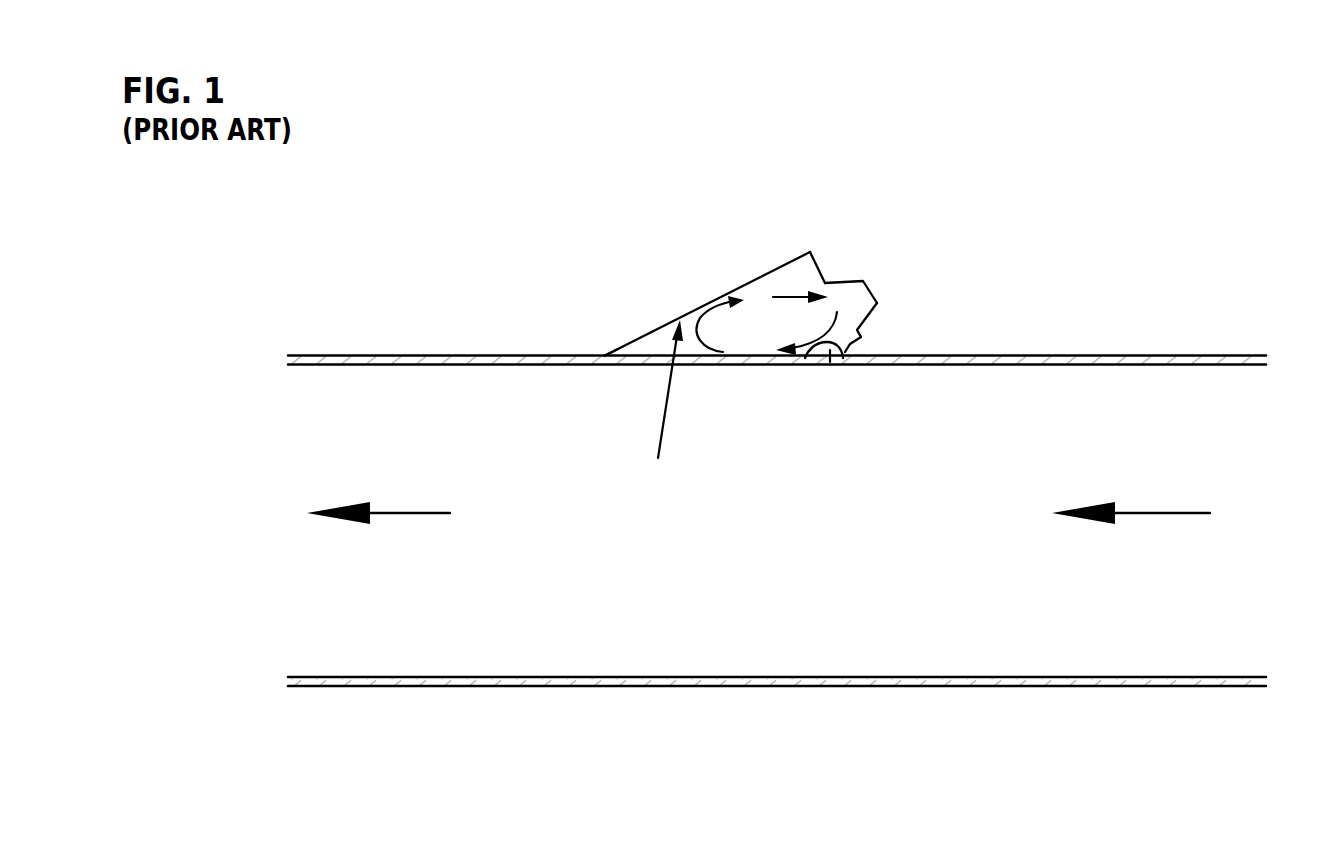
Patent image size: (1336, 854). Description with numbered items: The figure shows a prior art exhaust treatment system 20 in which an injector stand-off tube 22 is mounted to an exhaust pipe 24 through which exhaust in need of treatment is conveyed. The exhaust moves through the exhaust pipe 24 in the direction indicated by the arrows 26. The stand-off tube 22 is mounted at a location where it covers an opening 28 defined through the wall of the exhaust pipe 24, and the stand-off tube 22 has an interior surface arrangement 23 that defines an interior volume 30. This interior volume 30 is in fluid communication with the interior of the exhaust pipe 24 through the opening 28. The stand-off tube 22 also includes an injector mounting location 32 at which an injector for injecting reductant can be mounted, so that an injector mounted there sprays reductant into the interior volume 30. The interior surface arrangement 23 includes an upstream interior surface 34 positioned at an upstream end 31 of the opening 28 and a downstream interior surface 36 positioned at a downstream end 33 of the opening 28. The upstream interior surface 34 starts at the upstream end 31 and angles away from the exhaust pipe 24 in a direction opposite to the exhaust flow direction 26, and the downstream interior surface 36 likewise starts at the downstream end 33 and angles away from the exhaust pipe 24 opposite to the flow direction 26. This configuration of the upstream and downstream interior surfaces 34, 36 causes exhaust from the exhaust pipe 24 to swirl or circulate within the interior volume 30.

The exhaust treatment system 20 is at (446, 242).
The injector stand-off tube 22 is at (730, 290).
The interior surface arrangement 23 is at (690, 415).
The exhaust pipe 24 is at (1033, 355).
The exhaust flow direction arrows 26 is at (398, 513).
The opening 28 is at (728, 356).
The interior volume 30 is at (879, 251).
The upstream end of the opening 31 is at (830, 362).
The injector mounting location 32 is at (867, 283).
The downstream end of the opening 33 is at (604, 353).
The upstream interior surface 34 is at (806, 352).
The downstream interior surface 36 is at (652, 334).